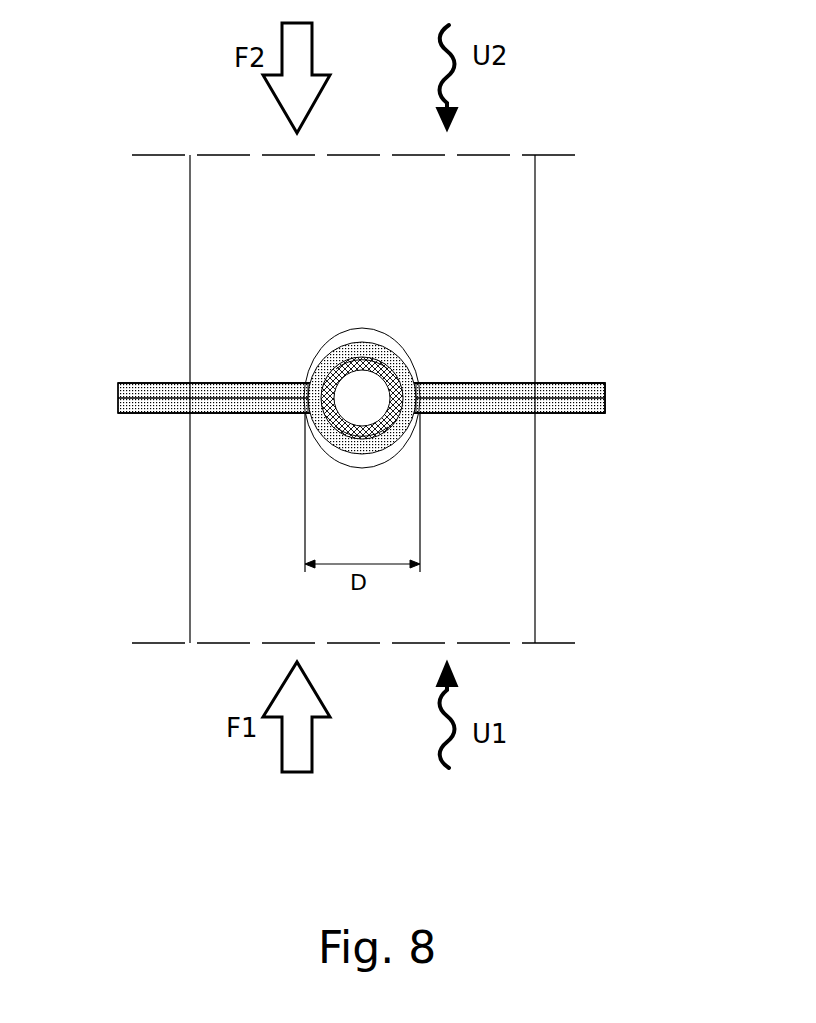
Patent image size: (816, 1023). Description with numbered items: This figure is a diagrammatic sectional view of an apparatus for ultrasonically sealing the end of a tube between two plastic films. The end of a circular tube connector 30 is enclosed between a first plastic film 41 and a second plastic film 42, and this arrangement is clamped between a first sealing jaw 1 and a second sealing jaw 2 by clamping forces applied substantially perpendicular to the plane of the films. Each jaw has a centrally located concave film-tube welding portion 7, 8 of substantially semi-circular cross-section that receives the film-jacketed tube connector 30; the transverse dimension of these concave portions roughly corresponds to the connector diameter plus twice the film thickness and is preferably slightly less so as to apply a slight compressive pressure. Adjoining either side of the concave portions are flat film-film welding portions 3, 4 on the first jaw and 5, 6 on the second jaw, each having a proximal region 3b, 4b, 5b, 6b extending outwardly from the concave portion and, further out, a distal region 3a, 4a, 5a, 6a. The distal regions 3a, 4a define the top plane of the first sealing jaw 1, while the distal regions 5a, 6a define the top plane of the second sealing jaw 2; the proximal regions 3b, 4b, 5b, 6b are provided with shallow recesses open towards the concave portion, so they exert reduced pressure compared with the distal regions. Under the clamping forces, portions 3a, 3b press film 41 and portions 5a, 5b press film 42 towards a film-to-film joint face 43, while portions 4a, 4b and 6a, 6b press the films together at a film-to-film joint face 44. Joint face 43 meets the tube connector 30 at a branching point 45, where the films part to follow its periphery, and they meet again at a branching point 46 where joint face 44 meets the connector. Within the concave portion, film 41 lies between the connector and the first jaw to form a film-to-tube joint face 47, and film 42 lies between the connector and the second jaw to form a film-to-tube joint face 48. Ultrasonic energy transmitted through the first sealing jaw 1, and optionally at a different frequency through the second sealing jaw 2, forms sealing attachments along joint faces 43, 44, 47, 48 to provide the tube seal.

The first sealing jaw 1 is at (500, 551).
The second sealing jaw 2 is at (488, 265).
The film-film welding portion 3 is at (482, 413).
The distal region 3a is at (485, 413).
The proximal region 3b is at (423, 413).
The film-film welding portion 4 is at (223, 413).
The distal region 4a is at (208, 413).
The proximal region 4b is at (299, 413).
The film-film welding portion 5 is at (483, 383).
The distal region 5a is at (486, 383).
The proximal region 5b is at (423, 383).
The film-film welding portion 6 is at (225, 383).
The distal region 6a is at (207, 383).
The proximal region 6b is at (300, 383).
The film-tube welding portion 7 is at (349, 470).
The film-tube welding portion 8 is at (370, 328).
The tube connector 30 is at (350, 432).
The plastic film 41 is at (578, 405).
The plastic film 42 is at (578, 395).
The film-to-film joint face 43 is at (460, 398).
The film-to-film joint face 44 is at (238, 398).
The branching point 45 is at (408, 398).
The branching point 46 is at (318, 398).
The film-to-tube joint face 47 is at (371, 440).
The film-to-tube joint face 48 is at (353, 357).